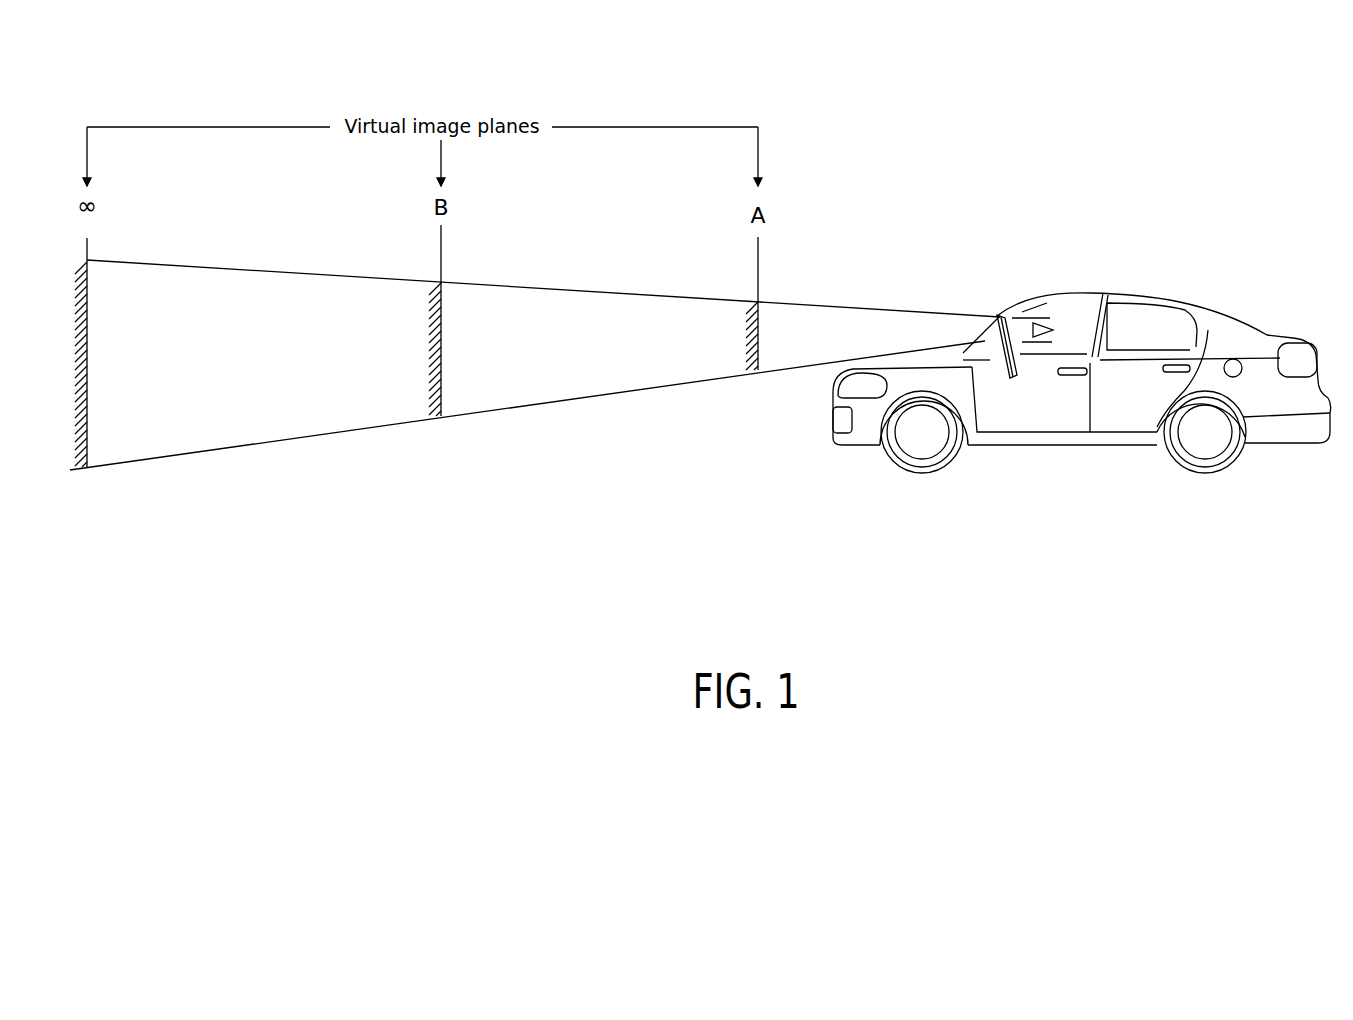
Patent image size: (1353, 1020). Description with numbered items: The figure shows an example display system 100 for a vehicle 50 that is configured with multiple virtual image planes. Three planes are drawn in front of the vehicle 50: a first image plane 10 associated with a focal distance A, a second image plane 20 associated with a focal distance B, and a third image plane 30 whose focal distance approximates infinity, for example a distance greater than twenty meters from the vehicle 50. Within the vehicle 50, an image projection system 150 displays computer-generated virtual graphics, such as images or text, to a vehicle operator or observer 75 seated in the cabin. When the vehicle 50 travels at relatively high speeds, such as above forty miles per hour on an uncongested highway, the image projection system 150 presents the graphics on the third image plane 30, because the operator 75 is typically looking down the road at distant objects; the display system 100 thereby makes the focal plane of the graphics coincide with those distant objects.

The display system 100 is at (1172, 118).
The image projection system 150 is at (991, 298).
The vehicle operator or observer 75 is at (1055, 333).
The vehicle 50 is at (1180, 300).
The first image plane 10 is at (758, 343).
The second image plane 20 is at (442, 387).
The third image plane 30 is at (87, 437).